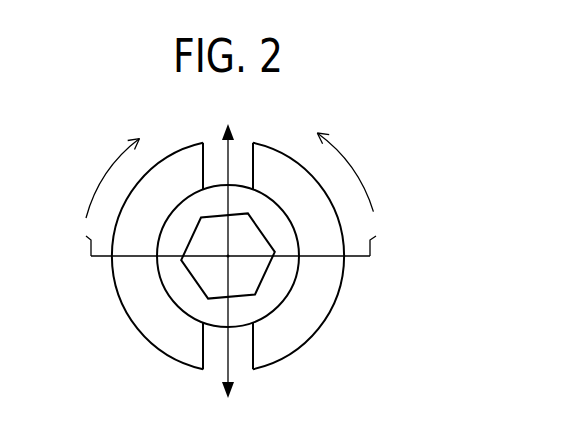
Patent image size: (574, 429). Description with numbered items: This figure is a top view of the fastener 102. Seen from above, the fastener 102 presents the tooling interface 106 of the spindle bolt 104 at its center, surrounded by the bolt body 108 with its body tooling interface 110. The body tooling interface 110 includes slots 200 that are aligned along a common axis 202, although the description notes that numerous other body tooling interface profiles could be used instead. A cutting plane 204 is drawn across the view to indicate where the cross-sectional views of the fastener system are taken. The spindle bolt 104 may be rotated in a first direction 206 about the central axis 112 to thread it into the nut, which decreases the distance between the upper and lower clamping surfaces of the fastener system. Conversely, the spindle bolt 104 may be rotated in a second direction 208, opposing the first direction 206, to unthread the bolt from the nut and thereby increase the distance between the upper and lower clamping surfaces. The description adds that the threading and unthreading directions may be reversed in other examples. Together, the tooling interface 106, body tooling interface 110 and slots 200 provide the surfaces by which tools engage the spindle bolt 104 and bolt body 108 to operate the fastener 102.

The fastener 102 is at (418, 218).
The spindle bolt 104 is at (285, 221).
The tooling interface 106 is at (255, 250).
The bolt body 108 is at (322, 203).
The body tooling interface 110 is at (209, 375).
The central axis 112 is at (230, 257).
The slots 200 is at (245, 172).
The common axis 202 is at (228, 289).
The cutting plane 204 is at (107, 257).
The first direction 206 is at (113, 164).
The second direction 208 is at (344, 157).